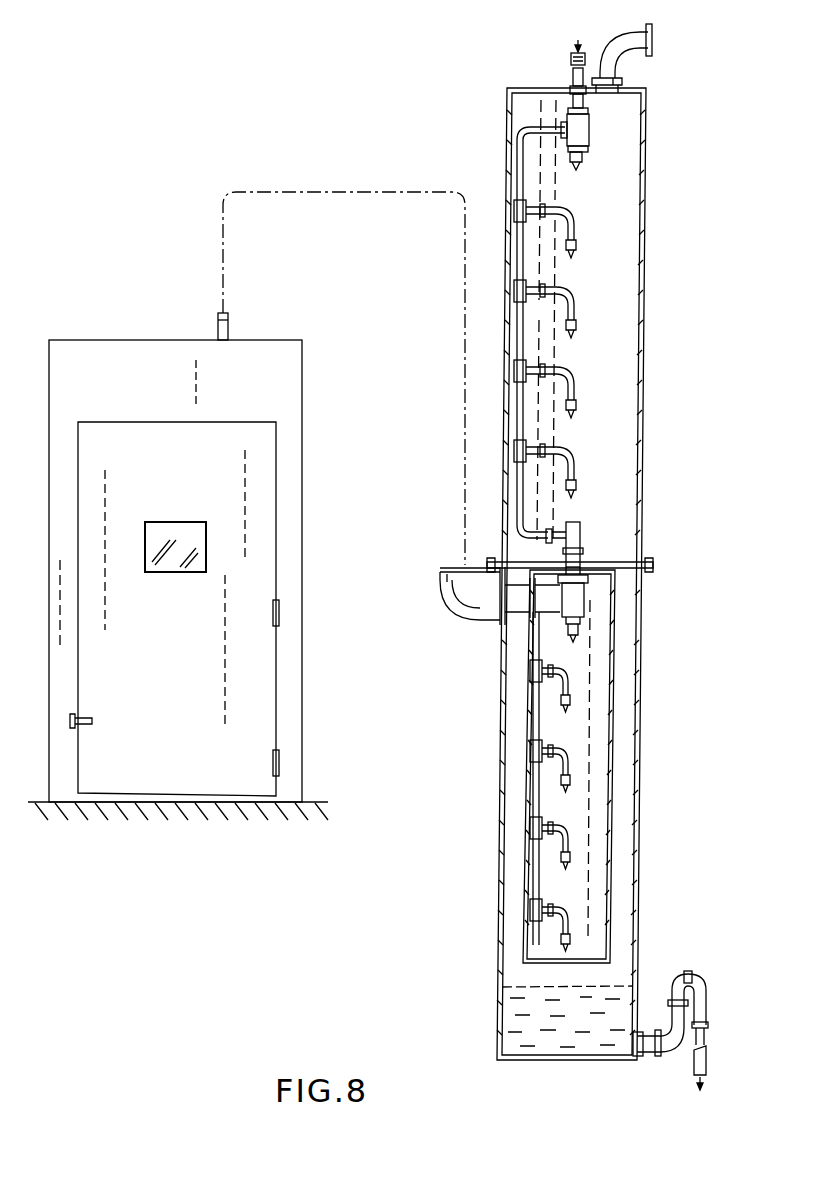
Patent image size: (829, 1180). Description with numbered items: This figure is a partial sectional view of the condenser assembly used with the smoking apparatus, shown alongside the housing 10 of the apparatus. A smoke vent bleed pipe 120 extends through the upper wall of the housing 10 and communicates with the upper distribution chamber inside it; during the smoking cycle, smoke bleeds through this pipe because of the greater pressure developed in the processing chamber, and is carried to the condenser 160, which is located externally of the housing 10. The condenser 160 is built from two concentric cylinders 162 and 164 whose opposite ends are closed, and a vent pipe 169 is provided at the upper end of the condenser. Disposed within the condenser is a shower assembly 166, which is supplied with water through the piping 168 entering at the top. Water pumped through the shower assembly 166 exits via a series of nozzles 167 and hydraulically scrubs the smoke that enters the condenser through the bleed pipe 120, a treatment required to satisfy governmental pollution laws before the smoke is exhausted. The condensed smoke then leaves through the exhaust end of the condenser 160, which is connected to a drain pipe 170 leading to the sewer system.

The housing 10 is at (93, 278).
The smoke vent bleed pipe 120 is at (218, 326).
The condenser 160 is at (458, 147).
The concentric cylinder 162 is at (640, 616).
The concentric cylinder 164 is at (614, 656).
The shower assembly 166 is at (568, 430).
The nozzles 167 is at (580, 160).
The piping 168 is at (570, 80).
The vent pipe 169 is at (654, 53).
The drain pipe 170 is at (688, 990).